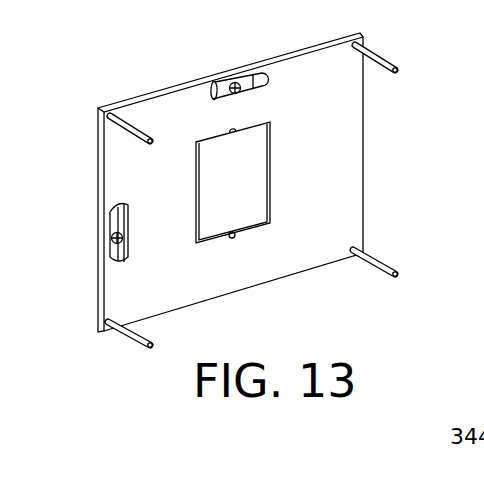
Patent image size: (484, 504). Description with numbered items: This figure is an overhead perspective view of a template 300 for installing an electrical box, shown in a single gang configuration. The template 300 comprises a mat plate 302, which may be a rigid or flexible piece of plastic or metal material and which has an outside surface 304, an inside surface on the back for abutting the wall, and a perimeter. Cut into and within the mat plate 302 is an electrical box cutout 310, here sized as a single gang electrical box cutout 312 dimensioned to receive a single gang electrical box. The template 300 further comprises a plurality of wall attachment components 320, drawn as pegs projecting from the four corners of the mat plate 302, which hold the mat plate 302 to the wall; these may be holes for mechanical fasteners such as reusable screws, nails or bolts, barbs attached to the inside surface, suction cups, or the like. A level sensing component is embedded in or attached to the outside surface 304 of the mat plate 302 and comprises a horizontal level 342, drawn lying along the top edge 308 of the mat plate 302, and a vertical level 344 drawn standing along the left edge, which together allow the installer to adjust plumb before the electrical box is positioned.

The template 300 is at (287, 172).
The mat plate 302 is at (284, 172).
The outside surface 304 is at (230, 172).
The top edge 308 is at (165, 92).
The electrical box cutout 310 is at (270, 240).
The single gang electrical box cutout 312 is at (326, 232).
The wall attachment components 320 is at (125, 117).
The horizontal level 342 is at (238, 74).
The vertical level 344 is at (110, 222).